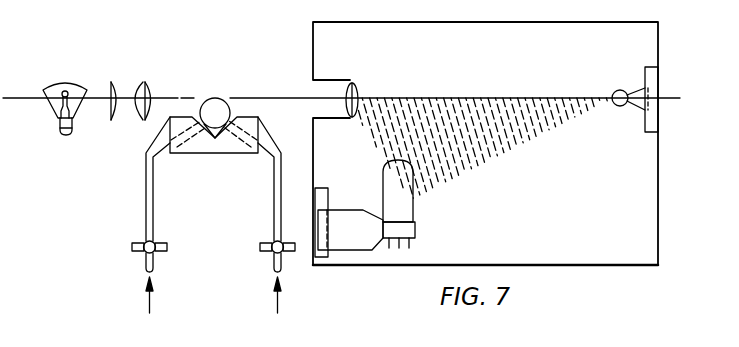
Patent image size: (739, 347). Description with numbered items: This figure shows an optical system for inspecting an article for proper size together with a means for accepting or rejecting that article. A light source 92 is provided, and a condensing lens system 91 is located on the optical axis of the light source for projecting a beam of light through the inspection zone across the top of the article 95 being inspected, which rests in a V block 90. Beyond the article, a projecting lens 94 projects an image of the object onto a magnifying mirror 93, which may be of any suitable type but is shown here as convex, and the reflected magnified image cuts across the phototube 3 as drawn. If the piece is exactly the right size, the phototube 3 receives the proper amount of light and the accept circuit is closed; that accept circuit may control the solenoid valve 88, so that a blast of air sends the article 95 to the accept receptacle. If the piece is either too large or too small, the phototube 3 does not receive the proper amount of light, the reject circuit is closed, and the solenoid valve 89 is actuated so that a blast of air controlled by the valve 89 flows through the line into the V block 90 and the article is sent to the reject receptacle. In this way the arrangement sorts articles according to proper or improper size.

The light source 92 is at (79, 82).
The condensing lens system 91 is at (126, 81).
The article 95 is at (228, 97).
The V block 90 is at (210, 153).
The solenoid valve 88 is at (142, 253).
The solenoid valve 89 is at (269, 253).
The projecting lens 94 is at (362, 90).
The magnifying mirror 93 is at (617, 91).
The phototube 3 is at (417, 210).